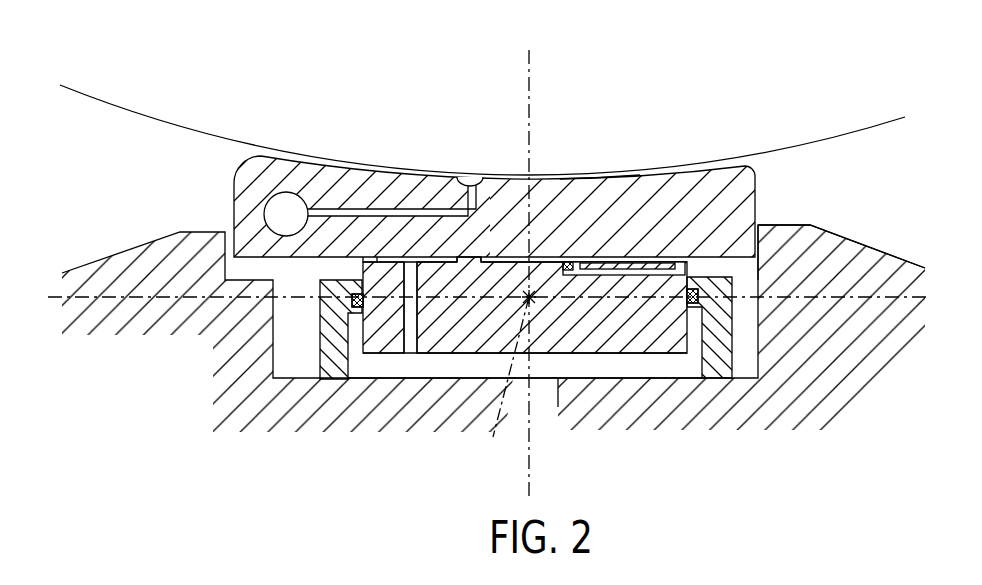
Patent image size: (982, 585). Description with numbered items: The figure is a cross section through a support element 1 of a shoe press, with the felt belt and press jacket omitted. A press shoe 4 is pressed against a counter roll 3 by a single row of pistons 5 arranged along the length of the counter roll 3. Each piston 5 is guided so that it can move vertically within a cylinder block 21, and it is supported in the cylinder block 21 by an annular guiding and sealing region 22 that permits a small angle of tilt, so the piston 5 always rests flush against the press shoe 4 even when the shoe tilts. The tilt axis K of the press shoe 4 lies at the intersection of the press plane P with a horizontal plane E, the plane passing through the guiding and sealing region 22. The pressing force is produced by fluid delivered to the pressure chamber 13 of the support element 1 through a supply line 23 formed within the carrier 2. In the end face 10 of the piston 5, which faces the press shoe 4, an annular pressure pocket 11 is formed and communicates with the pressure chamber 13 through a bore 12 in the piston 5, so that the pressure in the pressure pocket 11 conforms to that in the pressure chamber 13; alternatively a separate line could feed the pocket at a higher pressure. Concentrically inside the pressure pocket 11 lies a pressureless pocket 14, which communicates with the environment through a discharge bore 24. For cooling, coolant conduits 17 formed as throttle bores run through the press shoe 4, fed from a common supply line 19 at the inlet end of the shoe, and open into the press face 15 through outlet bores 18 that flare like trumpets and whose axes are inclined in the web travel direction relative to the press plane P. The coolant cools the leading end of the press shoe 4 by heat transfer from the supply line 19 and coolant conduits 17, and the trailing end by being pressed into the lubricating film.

The support element 1 is at (727, 353).
The carrier 2 is at (772, 413).
The counter roll 3 is at (183, 110).
The press shoe 4 is at (650, 180).
The piston 5 is at (465, 345).
The end face 10 is at (471, 254).
The annular pressure pocket 11 is at (397, 250).
The bore 12 is at (407, 350).
The pressure chamber 13 is at (670, 365).
The pocket 14 is at (548, 250).
The press face 15 is at (595, 178).
The coolant conduit 17 is at (340, 200).
The outlet bore 18 is at (470, 178).
The common supply line 19 is at (285, 205).
The cylinder block 21 is at (812, 238).
The annular guiding and sealing region 22 is at (758, 232).
The supply line 23 is at (555, 402).
The discharge bore 24 is at (680, 262).
The press plane P is at (530, 90).
The horizontal plane E is at (163, 300).
The tilt axis K is at (508, 387).